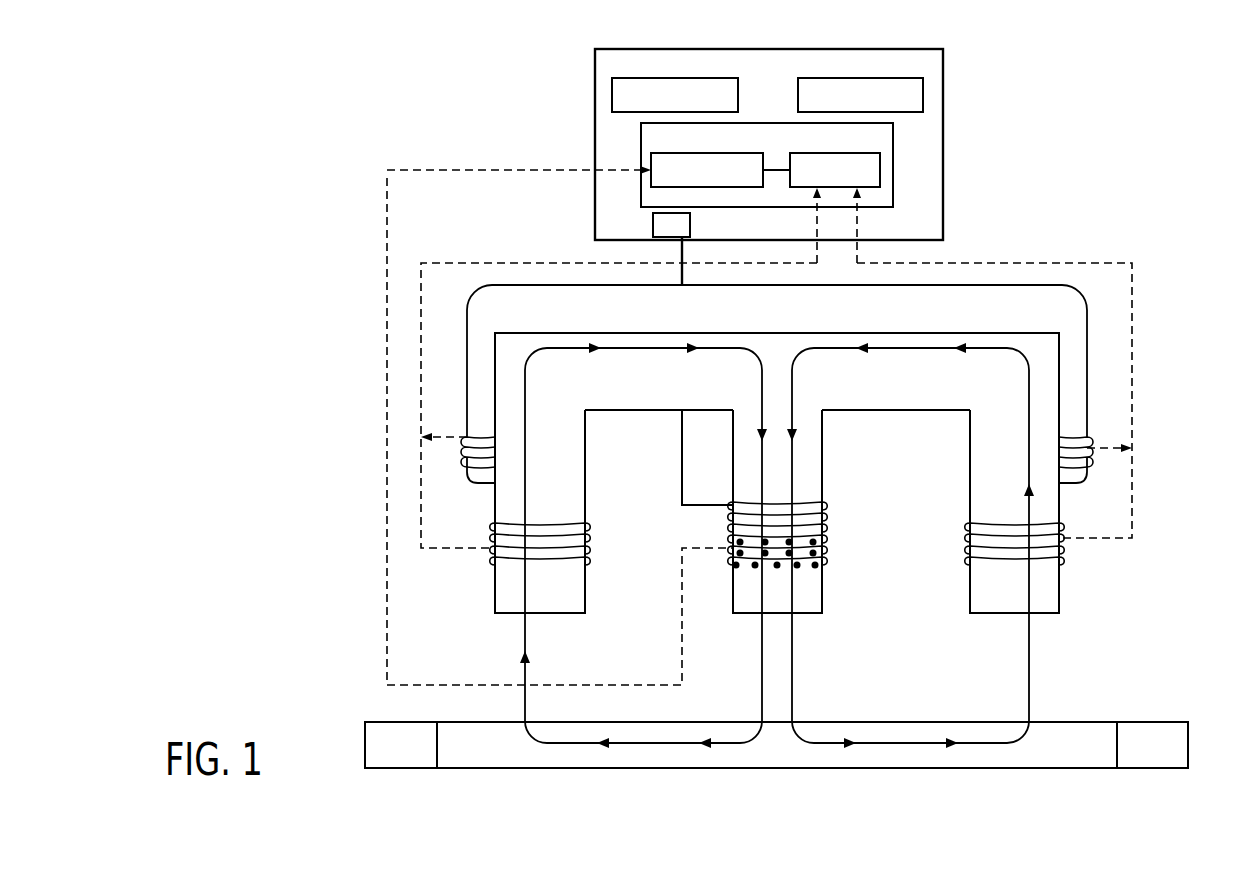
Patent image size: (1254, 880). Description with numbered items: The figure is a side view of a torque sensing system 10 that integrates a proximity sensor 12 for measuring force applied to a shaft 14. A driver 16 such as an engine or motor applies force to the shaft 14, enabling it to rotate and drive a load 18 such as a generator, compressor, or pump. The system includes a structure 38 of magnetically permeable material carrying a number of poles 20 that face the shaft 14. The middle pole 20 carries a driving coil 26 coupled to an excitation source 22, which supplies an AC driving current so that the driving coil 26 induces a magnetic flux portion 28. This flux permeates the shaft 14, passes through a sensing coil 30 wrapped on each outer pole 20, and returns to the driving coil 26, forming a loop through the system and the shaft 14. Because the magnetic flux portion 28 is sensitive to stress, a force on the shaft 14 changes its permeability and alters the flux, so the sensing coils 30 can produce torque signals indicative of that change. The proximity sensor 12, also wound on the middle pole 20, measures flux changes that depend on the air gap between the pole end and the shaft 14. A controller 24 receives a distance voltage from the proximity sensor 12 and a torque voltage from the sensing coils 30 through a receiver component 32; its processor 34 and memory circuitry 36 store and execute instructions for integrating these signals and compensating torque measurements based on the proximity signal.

The torque sensing system 10 is at (1134, 143).
The proximity sensor 12 is at (828, 538).
The shaft 14 is at (487, 768).
The driver 16 is at (405, 768).
The load 18 is at (1188, 745).
The poles 20 is at (458, 472).
The excitation source 22 is at (653, 222).
The controller 24 is at (903, 49).
The driving coil 26 is at (820, 507).
The magnetic flux portion 28 is at (653, 743).
The sensing coil 30 is at (467, 437).
The receiver component 32 is at (893, 163).
The processor 34 is at (612, 92).
The memory circuitry 36 is at (923, 92).
The structure 38 is at (838, 454).